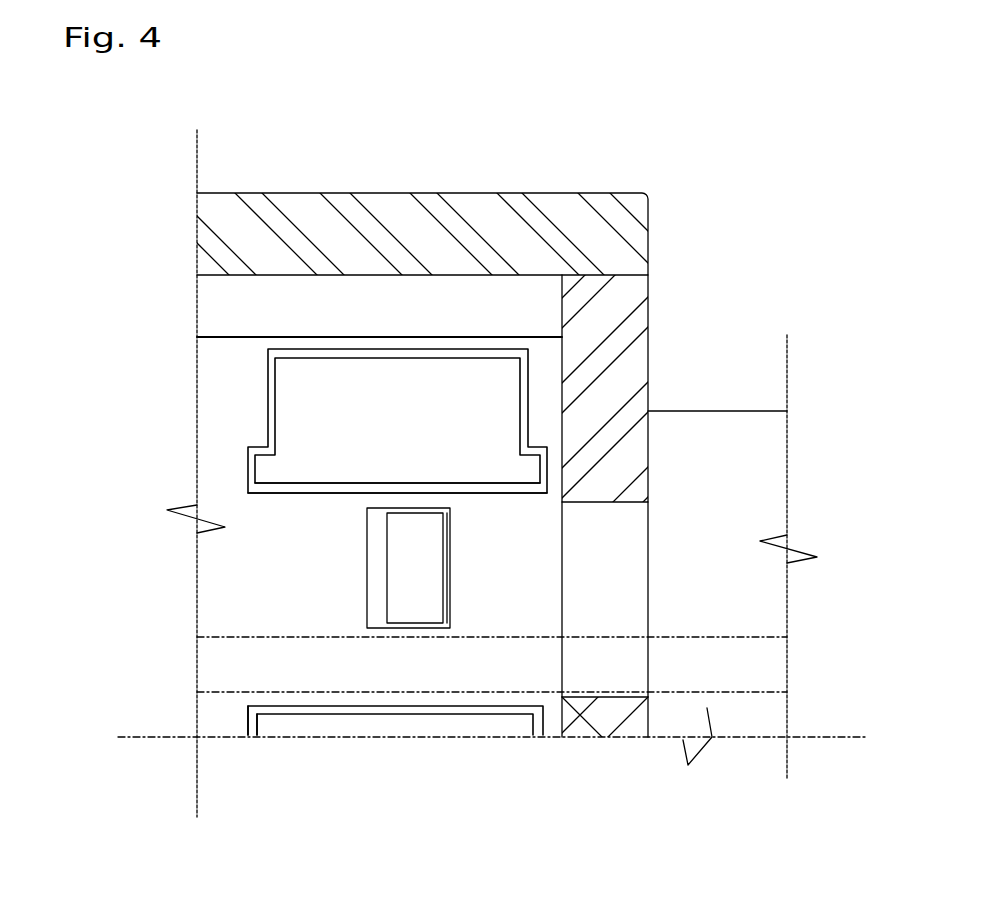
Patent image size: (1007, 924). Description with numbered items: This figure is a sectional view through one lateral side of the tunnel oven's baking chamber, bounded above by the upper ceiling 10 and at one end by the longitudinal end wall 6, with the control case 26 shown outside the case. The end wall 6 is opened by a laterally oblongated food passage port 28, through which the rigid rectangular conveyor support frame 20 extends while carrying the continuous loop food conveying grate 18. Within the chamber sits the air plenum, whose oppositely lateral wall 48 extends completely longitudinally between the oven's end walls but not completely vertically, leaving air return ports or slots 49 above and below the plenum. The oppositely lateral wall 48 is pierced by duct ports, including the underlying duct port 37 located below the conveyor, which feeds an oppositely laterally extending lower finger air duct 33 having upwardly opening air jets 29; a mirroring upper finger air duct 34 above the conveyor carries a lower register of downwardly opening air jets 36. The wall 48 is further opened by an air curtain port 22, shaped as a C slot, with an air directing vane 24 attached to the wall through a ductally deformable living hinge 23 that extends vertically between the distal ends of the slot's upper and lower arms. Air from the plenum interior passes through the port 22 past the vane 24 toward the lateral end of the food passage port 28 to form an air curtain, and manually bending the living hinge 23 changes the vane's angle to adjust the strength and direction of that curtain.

The longitudinal end wall 6 is at (620, 358).
The upper ceiling 10 is at (413, 230).
The continuous loop food conveying grate 18 is at (587, 697).
The rigid rectangular conveyor support frame 20 is at (492, 788).
The air curtain port 22 is at (377, 568).
The ductally deformable living hinge 23 is at (452, 563).
The air directing vane 24 is at (412, 600).
The control case 26 is at (720, 411).
The food passage port 28 is at (605, 538).
The upwardly opening air jets 29 is at (287, 700).
The lower finger air duct 33 is at (248, 722).
The upper finger air duct 34 is at (265, 387).
The downwardly opening air jets 36 is at (328, 493).
The duct port 37 is at (503, 737).
The oppositely lateral wall of the air plenum 48 is at (252, 363).
The air return ports or slots 49 is at (352, 303).